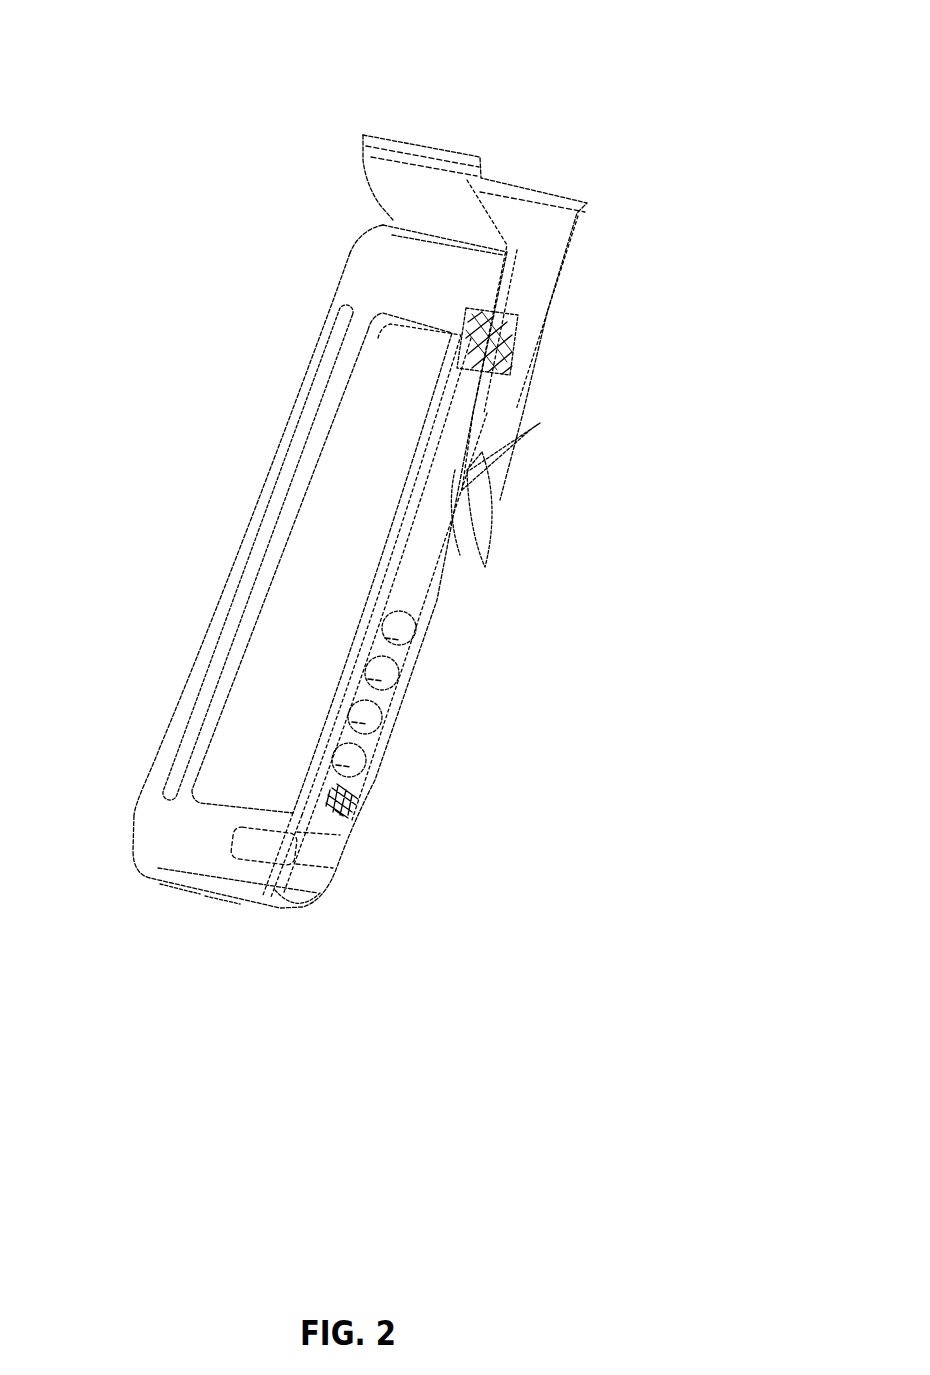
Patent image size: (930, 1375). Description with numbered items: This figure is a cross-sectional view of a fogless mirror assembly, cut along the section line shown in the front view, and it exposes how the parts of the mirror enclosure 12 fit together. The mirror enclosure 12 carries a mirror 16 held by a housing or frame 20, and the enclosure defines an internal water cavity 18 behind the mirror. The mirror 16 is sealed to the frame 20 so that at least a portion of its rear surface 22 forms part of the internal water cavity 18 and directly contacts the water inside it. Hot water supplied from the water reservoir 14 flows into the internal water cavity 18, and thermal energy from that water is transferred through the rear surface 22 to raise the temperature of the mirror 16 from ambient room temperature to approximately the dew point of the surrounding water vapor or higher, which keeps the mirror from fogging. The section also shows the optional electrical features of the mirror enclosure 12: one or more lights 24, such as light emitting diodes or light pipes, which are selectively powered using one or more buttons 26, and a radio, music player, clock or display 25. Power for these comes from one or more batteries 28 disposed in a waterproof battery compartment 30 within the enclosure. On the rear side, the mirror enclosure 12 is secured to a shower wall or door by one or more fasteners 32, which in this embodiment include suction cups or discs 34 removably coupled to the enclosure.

The mirror enclosure 12 is at (145, 345).
The water reservoir 14 is at (314, 99).
The mirror 16 is at (272, 675).
The internal water cavity 18 is at (378, 598).
The frame 20 is at (323, 310).
The rear surface 22 is at (478, 376).
The light 24 is at (270, 504).
The display 25 is at (230, 840).
The button 26 is at (212, 902).
The battery 28 is at (363, 763).
The waterproof battery compartment 30 is at (423, 636).
The fastener 32 is at (560, 424).
The suction cup 34 is at (483, 510).